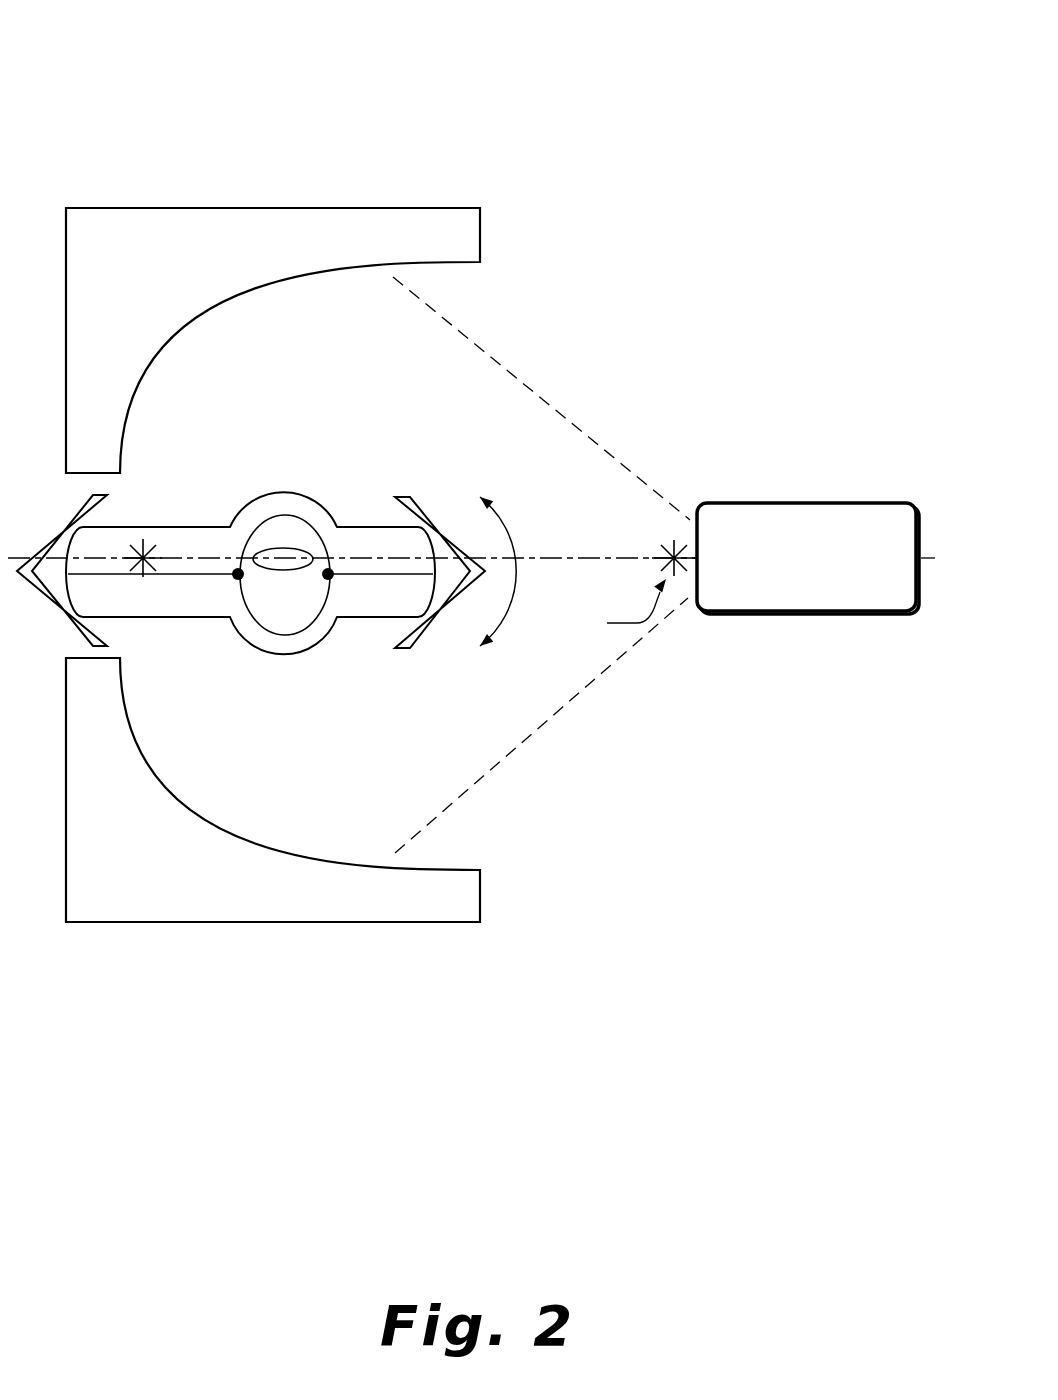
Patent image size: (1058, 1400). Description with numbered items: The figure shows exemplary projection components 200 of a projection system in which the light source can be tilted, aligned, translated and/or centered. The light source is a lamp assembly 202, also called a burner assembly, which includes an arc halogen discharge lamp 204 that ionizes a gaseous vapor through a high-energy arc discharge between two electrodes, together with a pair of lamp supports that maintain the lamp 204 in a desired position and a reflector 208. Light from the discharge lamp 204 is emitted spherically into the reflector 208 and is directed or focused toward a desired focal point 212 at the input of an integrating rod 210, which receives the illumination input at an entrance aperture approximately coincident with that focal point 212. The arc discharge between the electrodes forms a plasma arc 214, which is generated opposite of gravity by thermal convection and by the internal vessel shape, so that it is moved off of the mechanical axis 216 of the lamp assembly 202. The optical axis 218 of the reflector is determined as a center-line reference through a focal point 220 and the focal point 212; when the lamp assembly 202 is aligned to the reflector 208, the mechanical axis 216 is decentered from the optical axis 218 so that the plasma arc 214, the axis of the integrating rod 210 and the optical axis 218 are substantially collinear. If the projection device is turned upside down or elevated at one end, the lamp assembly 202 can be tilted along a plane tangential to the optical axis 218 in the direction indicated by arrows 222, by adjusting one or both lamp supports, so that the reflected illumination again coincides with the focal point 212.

The projection components 200 is at (180, 41).
The lamp assembly 202 is at (250, 553).
The arc halogen discharge lamp 204 is at (275, 492).
The reflector 208 is at (197, 208).
The integrating rod 210 is at (830, 594).
The focal point 212 is at (609, 609).
The plasma arc 214 is at (266, 548).
The mechanical axis 216 is at (199, 575).
The optical axis 218 is at (613, 558).
The focal point 220 is at (133, 597).
The arrows 222 is at (514, 556).